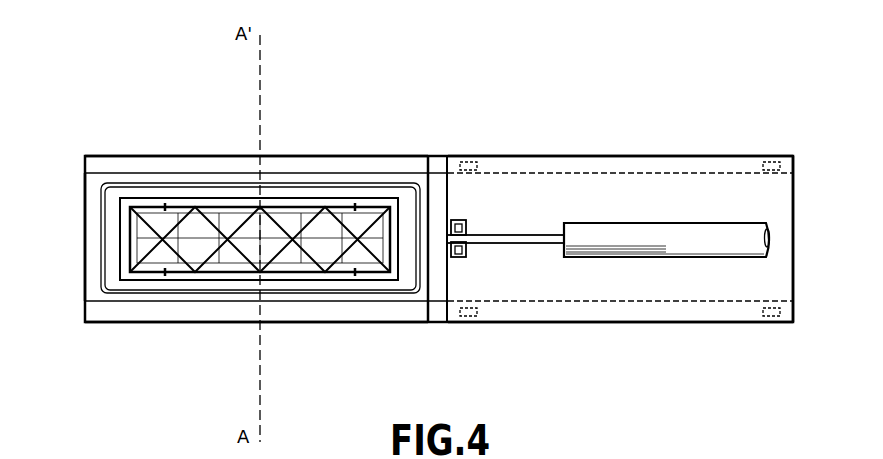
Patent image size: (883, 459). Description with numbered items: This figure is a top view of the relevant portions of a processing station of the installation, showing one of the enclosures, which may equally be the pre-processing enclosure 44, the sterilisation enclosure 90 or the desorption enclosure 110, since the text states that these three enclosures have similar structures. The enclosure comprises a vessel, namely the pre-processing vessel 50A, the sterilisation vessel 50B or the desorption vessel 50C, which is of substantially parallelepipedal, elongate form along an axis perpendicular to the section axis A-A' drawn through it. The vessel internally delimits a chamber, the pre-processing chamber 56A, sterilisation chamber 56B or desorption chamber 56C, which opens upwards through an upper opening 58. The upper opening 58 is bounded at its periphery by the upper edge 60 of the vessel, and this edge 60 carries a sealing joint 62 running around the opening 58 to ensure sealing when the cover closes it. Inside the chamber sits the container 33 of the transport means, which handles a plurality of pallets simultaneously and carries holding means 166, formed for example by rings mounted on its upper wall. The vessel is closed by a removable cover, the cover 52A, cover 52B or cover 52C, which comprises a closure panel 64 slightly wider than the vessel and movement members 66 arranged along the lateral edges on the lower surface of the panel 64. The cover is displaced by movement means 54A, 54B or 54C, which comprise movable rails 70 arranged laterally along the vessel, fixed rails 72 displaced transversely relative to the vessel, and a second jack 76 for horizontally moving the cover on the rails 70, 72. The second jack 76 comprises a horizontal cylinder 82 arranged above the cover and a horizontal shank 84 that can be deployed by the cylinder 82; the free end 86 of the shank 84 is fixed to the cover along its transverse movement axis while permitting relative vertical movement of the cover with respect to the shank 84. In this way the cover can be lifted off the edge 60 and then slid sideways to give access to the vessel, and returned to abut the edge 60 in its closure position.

The pre-processing enclosure 44 is at (412, 163).
The sterilisation enclosure 90 is at (412, 163).
The desorption enclosure 110 is at (93, 118).
The movable rails 70 is at (160, 158).
The upper edge 60 is at (93, 242).
The sealing joint 62 is at (100, 203).
The pre-processing chamber 56A is at (272, 188).
The sterilisation chamber 56B is at (272, 188).
The desorption chamber 56C is at (393, 185).
The upper opening 58 is at (287, 197).
The container 33 is at (268, 276).
The holding means 166 is at (165, 207).
The pre-processing vessel 50A is at (226, 266).
The sterilisation vessel 50B is at (226, 266).
The desorption vessel 50C is at (88, 284).
The fixed rails 72 is at (436, 156).
The removable cover 52A is at (620, 181).
The cover 52B is at (620, 181).
The cover 52C is at (670, 142).
The closure panel 64 is at (608, 322).
The movement members 66 is at (468, 161).
The horizontal shank 84 is at (508, 238).
The free end 86 is at (468, 250).
The second jack 76 is at (627, 217).
The movement means 54A is at (712, 236).
The movement means 54B is at (712, 236).
The movement means 54C is at (733, 217).
The horizontal cylinder 82 is at (643, 250).